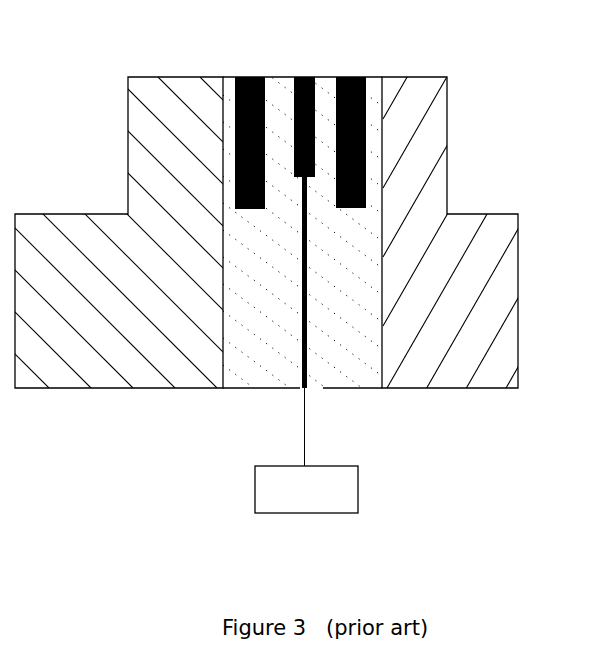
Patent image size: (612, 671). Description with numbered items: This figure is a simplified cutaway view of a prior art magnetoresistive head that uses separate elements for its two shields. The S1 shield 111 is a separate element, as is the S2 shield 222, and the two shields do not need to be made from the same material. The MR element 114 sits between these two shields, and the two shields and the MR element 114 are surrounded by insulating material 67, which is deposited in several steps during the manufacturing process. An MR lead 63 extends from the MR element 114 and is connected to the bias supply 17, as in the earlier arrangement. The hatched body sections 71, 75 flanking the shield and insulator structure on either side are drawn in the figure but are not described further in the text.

The left body block 71 is at (72, 226).
The right body block 75 is at (490, 226).
The insulating material 67 is at (279, 92).
The S1 shield 111 is at (236, 77).
The MR element 114 is at (304, 77).
The S2 shield 222 is at (355, 77).
The MR lead 63 is at (303, 372).
The bias supply 17 is at (352, 485).